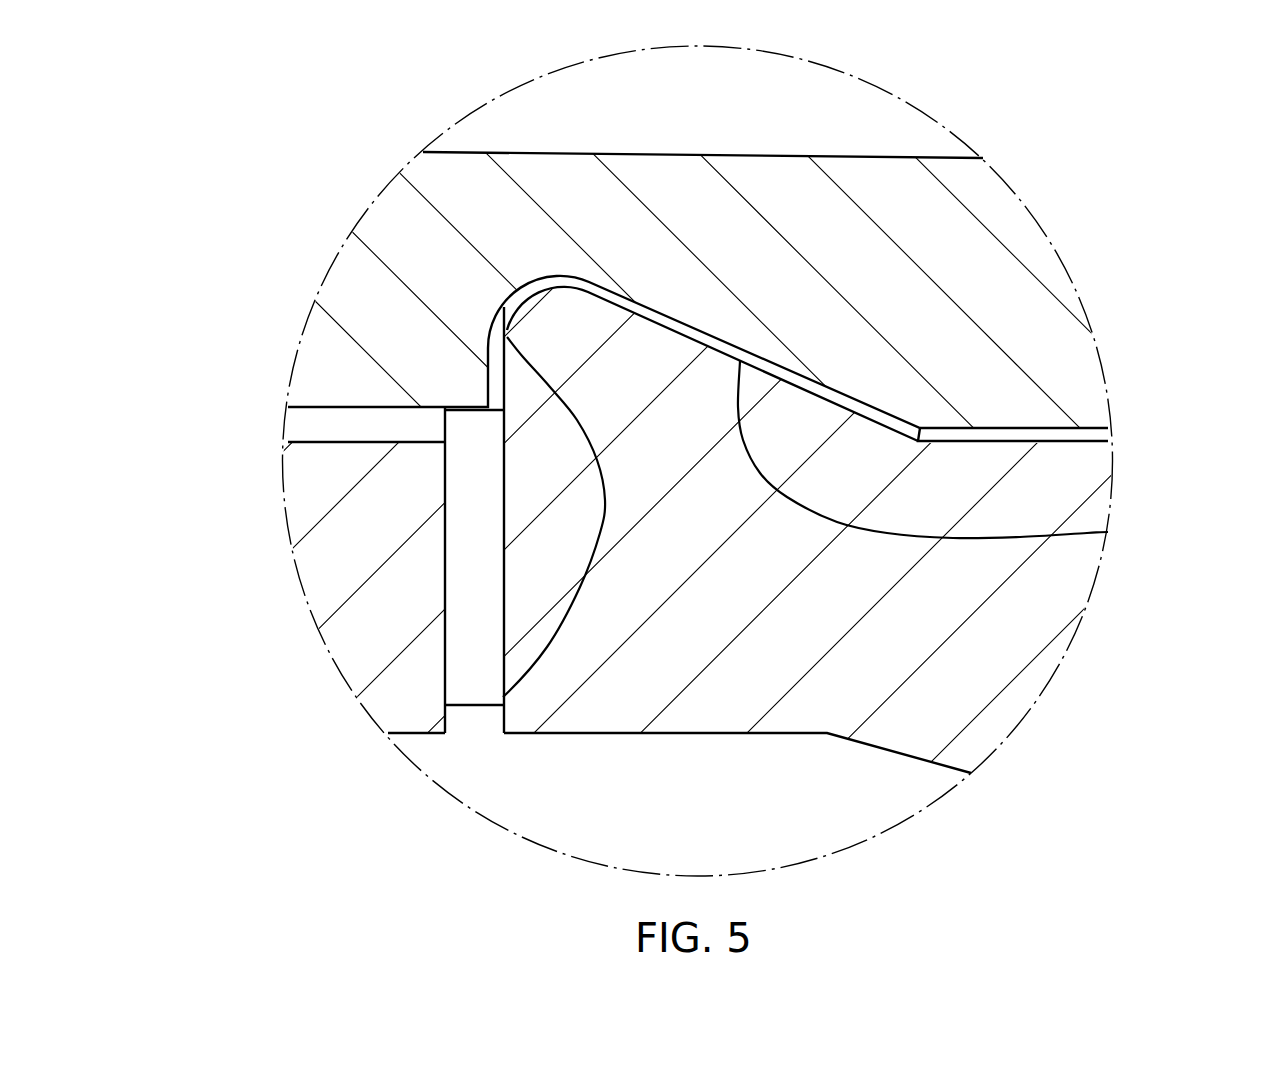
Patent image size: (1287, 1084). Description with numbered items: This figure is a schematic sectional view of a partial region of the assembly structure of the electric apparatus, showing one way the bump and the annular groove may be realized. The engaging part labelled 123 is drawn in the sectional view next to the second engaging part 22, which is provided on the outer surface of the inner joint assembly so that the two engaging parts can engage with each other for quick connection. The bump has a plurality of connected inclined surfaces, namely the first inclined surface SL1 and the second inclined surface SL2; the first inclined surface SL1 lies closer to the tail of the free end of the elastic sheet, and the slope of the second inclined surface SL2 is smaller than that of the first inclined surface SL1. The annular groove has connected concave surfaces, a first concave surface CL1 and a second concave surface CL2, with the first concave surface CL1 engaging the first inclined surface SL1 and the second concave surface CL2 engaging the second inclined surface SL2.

The second engaging part 22 is at (538, 282).
The engaging hook portion 123 is at (577, 308).
The first concave surface CL1 is at (505, 310).
The second concave surface CL2 is at (705, 335).
The first inclined surface SL1 is at (503, 697).
The second inclined surface SL2 is at (1108, 532).